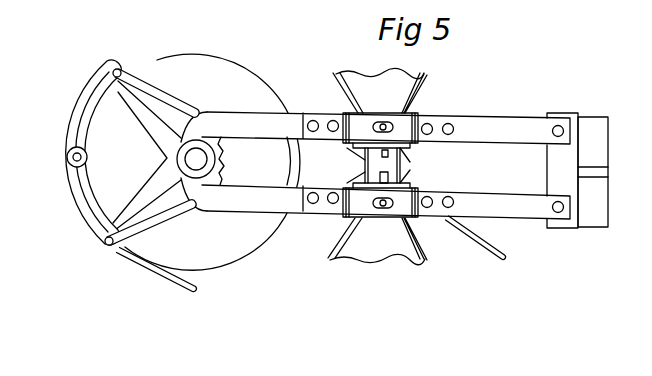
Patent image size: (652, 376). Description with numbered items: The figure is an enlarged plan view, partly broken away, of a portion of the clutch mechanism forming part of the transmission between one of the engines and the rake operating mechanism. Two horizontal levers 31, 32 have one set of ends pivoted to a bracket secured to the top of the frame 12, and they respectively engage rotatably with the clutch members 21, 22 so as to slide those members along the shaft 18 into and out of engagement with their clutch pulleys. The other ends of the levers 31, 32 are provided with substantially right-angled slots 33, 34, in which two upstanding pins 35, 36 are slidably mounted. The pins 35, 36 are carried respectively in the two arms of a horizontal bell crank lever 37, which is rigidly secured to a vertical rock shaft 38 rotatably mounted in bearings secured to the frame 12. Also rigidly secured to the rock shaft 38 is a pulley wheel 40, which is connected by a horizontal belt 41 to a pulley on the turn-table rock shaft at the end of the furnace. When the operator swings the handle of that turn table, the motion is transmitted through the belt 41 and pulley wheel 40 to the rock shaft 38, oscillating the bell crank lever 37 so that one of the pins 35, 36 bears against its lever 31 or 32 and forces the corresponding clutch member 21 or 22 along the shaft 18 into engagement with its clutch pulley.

The frame 12 is at (583, 123).
The shaft 18 is at (390, 163).
The clutch member 21 is at (402, 90).
The clutch member 22 is at (403, 240).
The horizontal lever 31 is at (505, 118).
The horizontal lever 32 is at (507, 202).
The right-angled slot 33 is at (88, 112).
The right-angled slot 34 is at (188, 231).
The upstanding pin 35 is at (117, 69).
The upstanding pin 36 is at (110, 249).
The bell crank lever 37 is at (162, 135).
The vertical rock shaft 38 is at (203, 159).
The pulley wheel 40 is at (243, 242).
The horizontal belt 41 is at (500, 258).